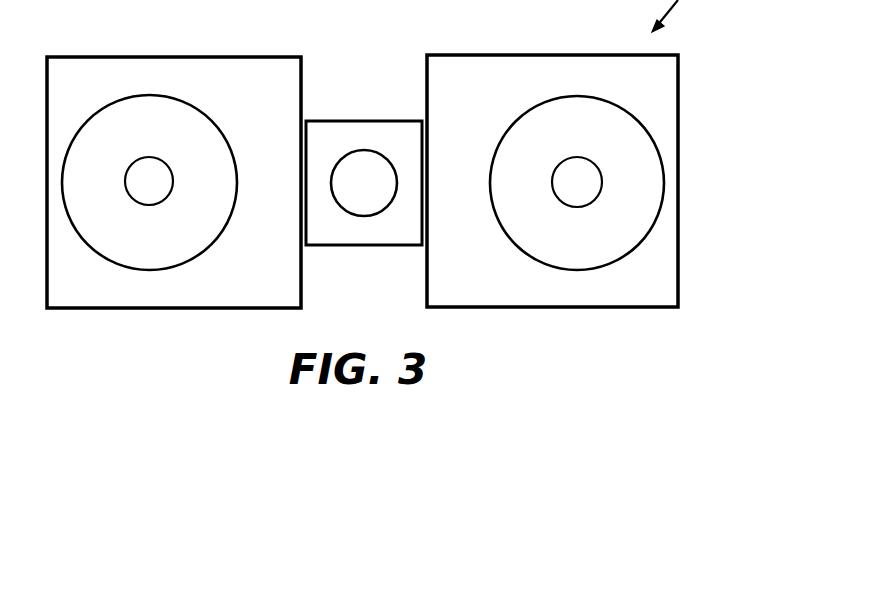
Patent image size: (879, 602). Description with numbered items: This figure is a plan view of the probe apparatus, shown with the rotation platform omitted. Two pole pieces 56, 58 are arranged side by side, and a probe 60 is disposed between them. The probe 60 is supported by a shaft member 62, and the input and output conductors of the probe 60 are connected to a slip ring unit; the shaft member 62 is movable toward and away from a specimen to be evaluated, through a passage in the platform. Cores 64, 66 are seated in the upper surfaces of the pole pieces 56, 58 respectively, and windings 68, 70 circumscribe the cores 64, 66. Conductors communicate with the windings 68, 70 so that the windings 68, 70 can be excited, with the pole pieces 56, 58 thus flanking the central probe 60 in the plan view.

The pole piece 56 is at (267, 65).
The pole piece 58 is at (648, 283).
The probe 60 is at (378, 233).
The shaft member 62 is at (350, 168).
The core 64 is at (157, 198).
The core 66 is at (578, 192).
The winding 68 is at (207, 128).
The winding 70 is at (530, 122).